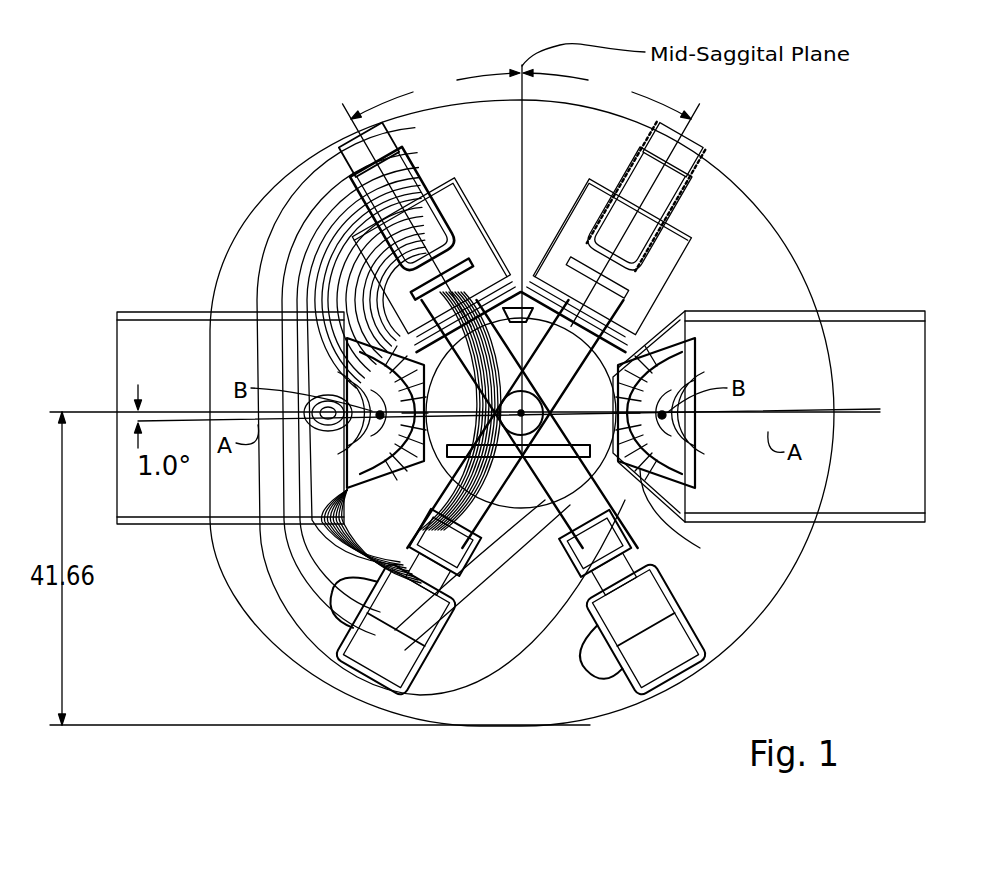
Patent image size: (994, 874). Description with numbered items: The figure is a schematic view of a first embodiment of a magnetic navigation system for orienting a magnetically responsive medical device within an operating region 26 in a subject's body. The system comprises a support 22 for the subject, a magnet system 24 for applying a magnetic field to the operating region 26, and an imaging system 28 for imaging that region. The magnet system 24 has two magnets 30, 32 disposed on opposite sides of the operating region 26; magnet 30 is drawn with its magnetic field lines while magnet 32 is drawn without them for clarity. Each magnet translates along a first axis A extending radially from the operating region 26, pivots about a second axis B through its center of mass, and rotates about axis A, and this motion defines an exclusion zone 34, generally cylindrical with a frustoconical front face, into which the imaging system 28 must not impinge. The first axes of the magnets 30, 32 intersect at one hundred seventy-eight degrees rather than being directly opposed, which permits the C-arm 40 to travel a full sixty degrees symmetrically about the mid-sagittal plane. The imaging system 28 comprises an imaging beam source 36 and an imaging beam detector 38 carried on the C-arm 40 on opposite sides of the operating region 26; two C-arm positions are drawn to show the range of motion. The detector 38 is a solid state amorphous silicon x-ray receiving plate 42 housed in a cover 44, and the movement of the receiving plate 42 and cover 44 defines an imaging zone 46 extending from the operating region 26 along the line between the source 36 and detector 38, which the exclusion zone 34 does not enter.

The support 22 is at (618, 458).
The magnet system 24 is at (180, 565).
The operating region 26 is at (613, 507).
The imaging system 28 is at (318, 86).
The magnet 30 is at (455, 495).
The magnet 32 is at (693, 356).
The exclusion zone 34 is at (184, 310).
The imaging beam source 36 is at (643, 611).
The imaging beam detector 38 is at (514, 272).
The C-arm 40 is at (684, 200).
The receiving plate 42 is at (380, 310).
The cover 44 is at (338, 308).
The imaging zone 46 is at (483, 258).